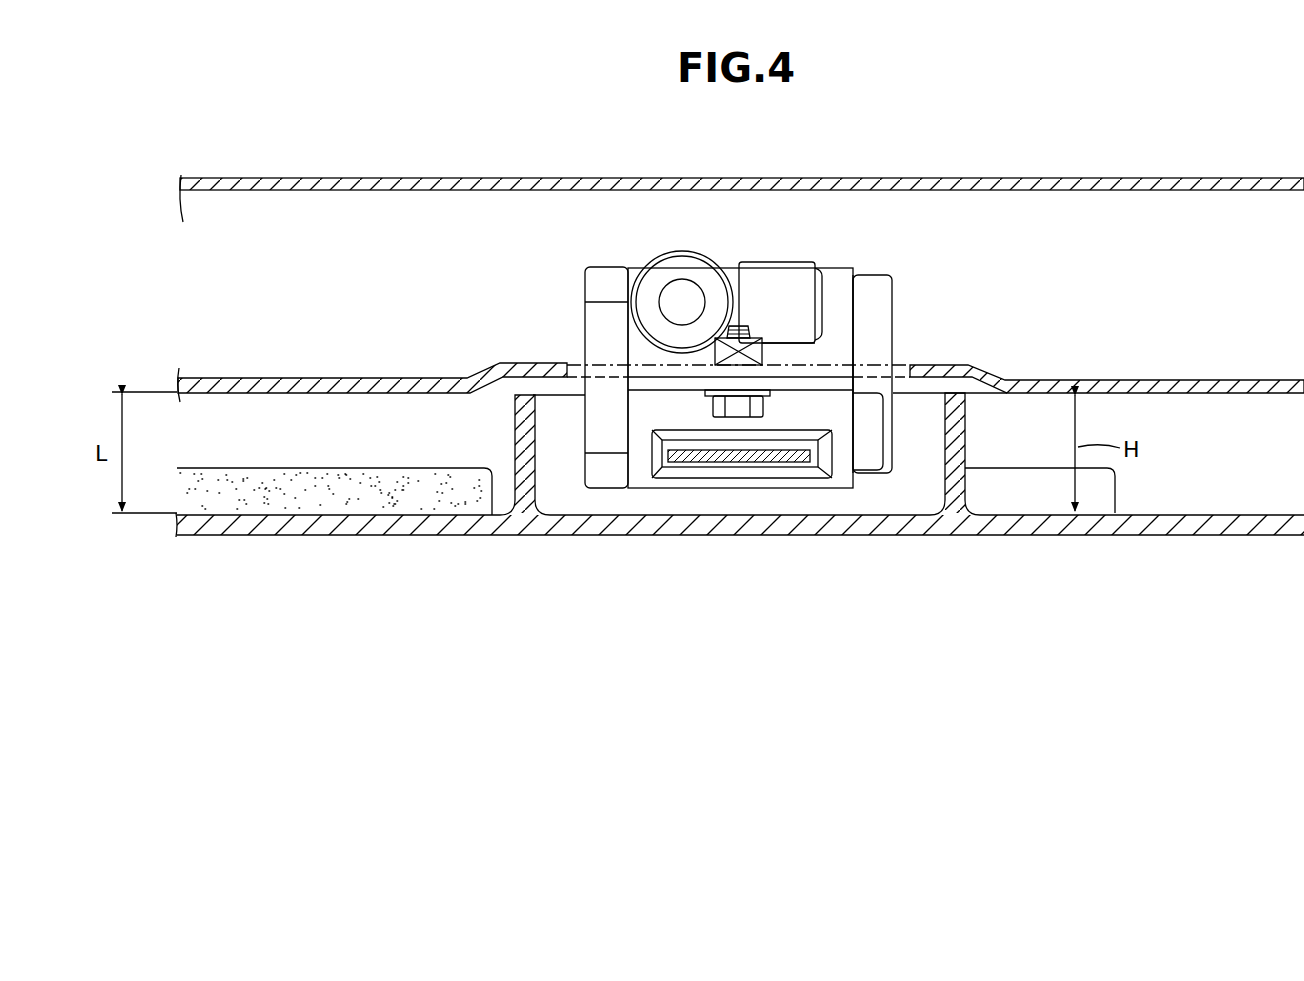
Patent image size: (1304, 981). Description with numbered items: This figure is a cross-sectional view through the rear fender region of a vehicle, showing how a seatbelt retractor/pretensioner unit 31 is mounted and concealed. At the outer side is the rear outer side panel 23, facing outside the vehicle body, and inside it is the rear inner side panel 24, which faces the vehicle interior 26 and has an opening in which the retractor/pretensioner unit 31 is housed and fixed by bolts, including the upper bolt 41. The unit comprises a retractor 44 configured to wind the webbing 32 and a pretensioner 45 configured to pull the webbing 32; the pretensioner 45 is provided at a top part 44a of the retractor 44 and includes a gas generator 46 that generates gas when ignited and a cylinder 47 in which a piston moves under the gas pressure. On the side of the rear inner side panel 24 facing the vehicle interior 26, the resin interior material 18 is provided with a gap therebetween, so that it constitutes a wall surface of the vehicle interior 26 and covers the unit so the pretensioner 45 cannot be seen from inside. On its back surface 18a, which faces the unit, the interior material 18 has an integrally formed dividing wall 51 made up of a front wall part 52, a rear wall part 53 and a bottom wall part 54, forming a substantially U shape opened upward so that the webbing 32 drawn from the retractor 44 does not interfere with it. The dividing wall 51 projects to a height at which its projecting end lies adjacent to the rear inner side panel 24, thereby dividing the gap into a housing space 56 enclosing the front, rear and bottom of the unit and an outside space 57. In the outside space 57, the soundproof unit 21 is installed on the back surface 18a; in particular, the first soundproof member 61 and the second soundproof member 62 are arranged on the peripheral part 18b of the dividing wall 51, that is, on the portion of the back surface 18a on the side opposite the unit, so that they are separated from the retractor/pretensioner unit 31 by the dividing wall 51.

The interior material 18 is at (1193, 537).
The back surface 18a is at (1212, 505).
The peripheral part 18b is at (397, 505).
The soundproof unit 21 is at (380, 462).
The rear outer side panel 23 is at (1170, 178).
The rear inner side panel 24 is at (1180, 380).
The vehicle interior 26 is at (783, 716).
The retractor/pretensioner unit 31 is at (806, 422).
The webbing 32 is at (770, 462).
The upper bolt 41 is at (757, 407).
The retractor 44 is at (637, 484).
The top part 44a is at (838, 312).
The pretensioner 45 is at (648, 262).
The gas generator 46 is at (777, 274).
The cylinder 47 is at (684, 252).
The dividing wall 51 is at (968, 433).
The front wall part 52 is at (515, 441).
The rear wall part 53 is at (965, 456).
The bottom wall part 54 is at (555, 415).
The housing space 56 is at (578, 477).
The outside space 57 is at (308, 447).
The first soundproof member 61 is at (300, 505).
The second soundproof member 62 is at (1013, 500).